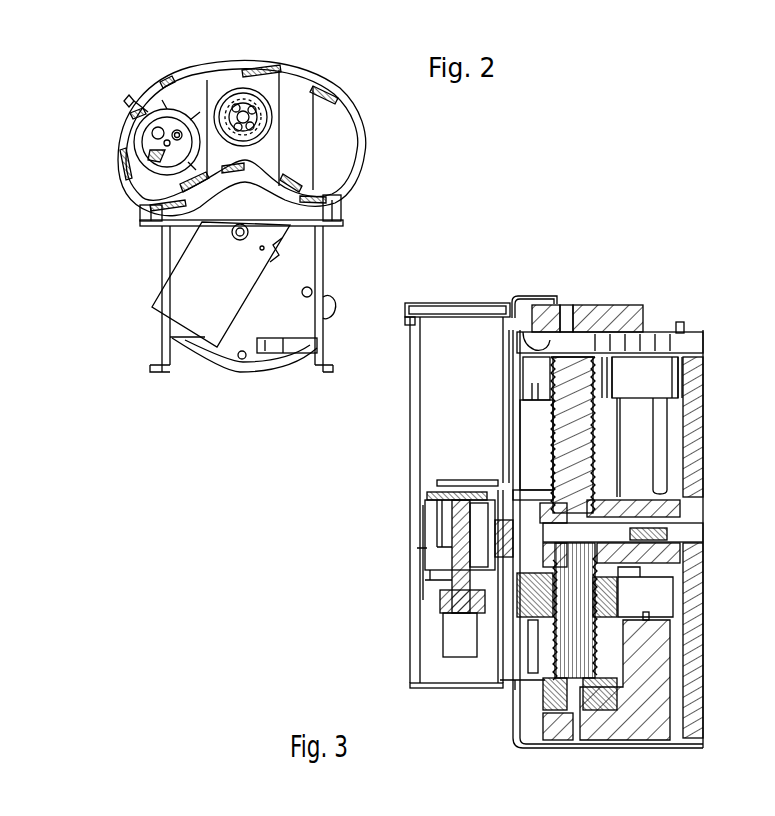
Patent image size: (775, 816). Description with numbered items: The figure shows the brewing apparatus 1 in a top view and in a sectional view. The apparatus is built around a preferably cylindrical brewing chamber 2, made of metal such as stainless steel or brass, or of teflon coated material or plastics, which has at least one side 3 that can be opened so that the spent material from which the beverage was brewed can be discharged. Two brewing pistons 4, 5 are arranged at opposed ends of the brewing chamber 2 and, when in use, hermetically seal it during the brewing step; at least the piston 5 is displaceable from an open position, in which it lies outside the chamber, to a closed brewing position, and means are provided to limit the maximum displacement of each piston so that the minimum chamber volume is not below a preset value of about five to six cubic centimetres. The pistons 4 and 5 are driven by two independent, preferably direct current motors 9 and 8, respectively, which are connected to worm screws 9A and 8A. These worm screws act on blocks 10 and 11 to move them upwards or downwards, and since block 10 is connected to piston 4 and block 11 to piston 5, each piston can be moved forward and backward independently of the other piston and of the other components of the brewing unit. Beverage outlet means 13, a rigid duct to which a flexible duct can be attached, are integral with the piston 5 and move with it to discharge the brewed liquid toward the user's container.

In FIG. 2, the brewing apparatus 1 is at (200, 408).
In FIG. 3, the brewing apparatus 1 is at (633, 216).
In FIG. 2, the brewing chamber 2 is at (273, 137).
In FIG. 3, the brewing chamber 2 is at (420, 513).
In FIG. 3, the open side 3 is at (466, 480).
In FIG. 2, the brewing piston 4 is at (260, 98).
In FIG. 3, the brewing piston 4 is at (417, 548).
In FIG. 2, the brewing piston 5 is at (160, 185).
In FIG. 3, the motor 8 is at (615, 306).
In FIG. 3, the worm screw 8A is at (568, 352).
In FIG. 3, the motor 9 is at (657, 717).
In FIG. 3, the worm screw 9A is at (527, 650).
In FIG. 3, the block 10 is at (619, 625).
In FIG. 3, the block 11 is at (613, 380).
In FIG. 2, the beverage outlet means 13 is at (128, 100).